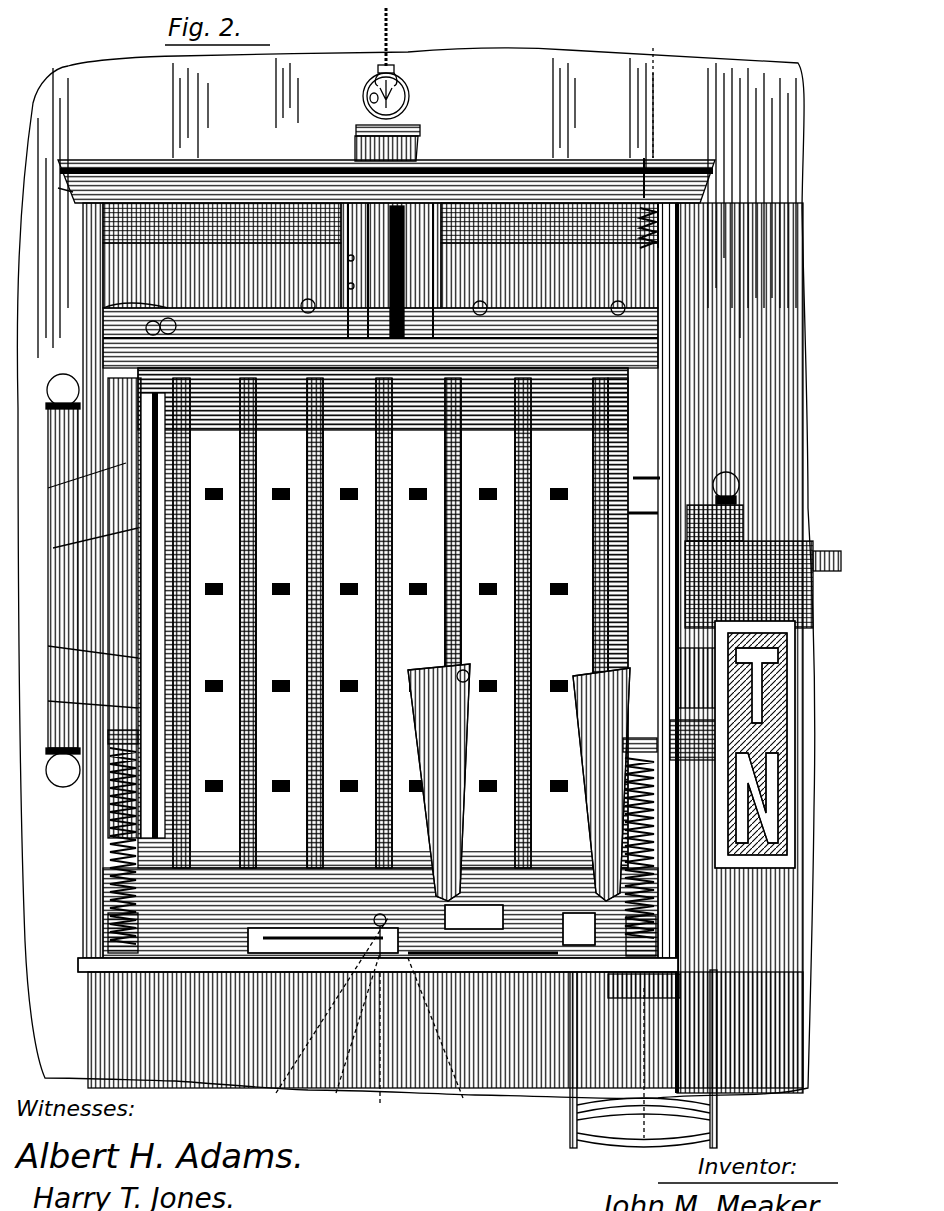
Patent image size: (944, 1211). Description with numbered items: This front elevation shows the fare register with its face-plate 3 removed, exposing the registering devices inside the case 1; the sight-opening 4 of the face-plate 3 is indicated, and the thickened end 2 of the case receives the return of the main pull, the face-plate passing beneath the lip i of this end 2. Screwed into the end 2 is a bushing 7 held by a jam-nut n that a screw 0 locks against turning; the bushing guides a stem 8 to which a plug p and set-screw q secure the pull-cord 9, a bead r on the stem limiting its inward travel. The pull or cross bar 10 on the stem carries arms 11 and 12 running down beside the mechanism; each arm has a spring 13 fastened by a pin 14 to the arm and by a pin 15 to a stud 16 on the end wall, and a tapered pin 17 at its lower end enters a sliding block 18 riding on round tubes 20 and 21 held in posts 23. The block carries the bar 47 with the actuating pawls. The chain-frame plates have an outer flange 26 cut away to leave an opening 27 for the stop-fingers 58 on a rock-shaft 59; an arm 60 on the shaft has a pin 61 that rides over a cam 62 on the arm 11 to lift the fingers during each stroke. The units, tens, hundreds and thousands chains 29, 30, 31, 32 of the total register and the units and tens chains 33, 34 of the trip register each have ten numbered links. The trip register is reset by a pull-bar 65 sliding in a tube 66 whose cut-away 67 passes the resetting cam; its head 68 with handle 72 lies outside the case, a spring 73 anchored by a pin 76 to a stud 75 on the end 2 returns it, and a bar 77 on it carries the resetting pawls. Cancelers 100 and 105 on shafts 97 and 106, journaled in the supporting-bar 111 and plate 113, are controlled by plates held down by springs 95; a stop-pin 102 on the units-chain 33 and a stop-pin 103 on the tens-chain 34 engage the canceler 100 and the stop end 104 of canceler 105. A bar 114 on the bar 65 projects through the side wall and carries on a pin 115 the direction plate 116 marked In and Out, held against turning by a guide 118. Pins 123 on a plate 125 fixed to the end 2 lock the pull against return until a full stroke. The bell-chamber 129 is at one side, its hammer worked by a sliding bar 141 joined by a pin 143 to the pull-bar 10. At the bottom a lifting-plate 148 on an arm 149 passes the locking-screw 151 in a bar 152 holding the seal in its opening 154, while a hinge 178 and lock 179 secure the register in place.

The case 1 is at (85, 230).
The end of case 2 is at (255, 160).
The face-plate 3 is at (380, 1052).
The sight-opening 4 is at (643, 598).
The bushing 7 is at (347, 135).
The stem 8 is at (356, 98).
The pull-cord 9 is at (382, 22).
The pull or cross bar 10 is at (445, 372).
The arm 11 is at (646, 465).
The arm 12 is at (77, 489).
The spring 13 is at (100, 790).
The pin 14 is at (382, 731).
The pin 15 is at (100, 935).
The stud 16 is at (100, 960).
The pin 17 is at (80, 698).
The sliding block 18 is at (625, 644).
The tube 20 is at (641, 608).
The middle tube 21 is at (420, 368).
The post 23 is at (130, 390).
The outer flange 26 is at (240, 375).
The opening 27 is at (290, 370).
The units-chain 29 is at (405, 548).
The tens-chain 30 is at (353, 548).
The hundreds-chain 31 is at (271, 543).
The thousands-chain 32 is at (203, 513).
The units-chain 33 is at (560, 556).
The tens-chain 34 is at (505, 586).
The bar 47 is at (147, 685).
The stop-finger 58 is at (215, 375).
The rock-shaft 59 is at (540, 350).
The arm 60 is at (610, 420).
The pin 61 is at (665, 473).
The cam 62 is at (630, 535).
The pull-bar 65 is at (640, 270).
The shell or tube 66 is at (736, 510).
The cut-away portion 67 is at (579, 921).
The head 68 is at (593, 1109).
The handle 72 is at (720, 1104).
The spring 73 is at (662, 228).
The stud 75 is at (638, 190).
The pin 76 is at (652, 200).
The bar 77 is at (625, 555).
The spring 95 is at (492, 929).
The shaft 97 is at (557, 889).
The canceler 100 is at (519, 782).
The stop-pin 102 is at (548, 586).
The stop-pin 103 is at (449, 665).
The stop end 104 is at (439, 700).
The canceler 105 is at (439, 721).
The shaft 106 is at (483, 887).
The supporting-bar 111 is at (518, 887).
The plate 113 is at (323, 930).
The bar 114 is at (740, 690).
The pivot or pin 115 is at (766, 727).
The plate 116 is at (780, 718).
The guide 118 is at (693, 704).
The pins 123 is at (338, 278).
The plate 125 is at (410, 258).
The bell-chamber 129 is at (380, 628).
The sliding bar 141 is at (160, 300).
The pin 143 is at (110, 320).
The lifting-plate 148 is at (483, 946).
The arm 149 is at (353, 1033).
The locking-screw 151 is at (402, 936).
The bar 152 is at (322, 1015).
The opening 154 is at (447, 1038).
The hinge 178 is at (53, 580).
The lock 179 is at (745, 555).
The edge i is at (58, 185).
The jam-nut n is at (350, 148).
The plug p is at (368, 60).
The set-screw q is at (362, 88).
The bead r is at (356, 120).
The screw 0 is at (455, 195).